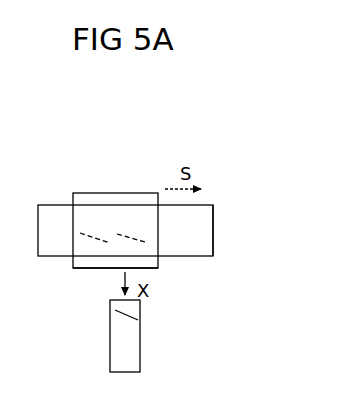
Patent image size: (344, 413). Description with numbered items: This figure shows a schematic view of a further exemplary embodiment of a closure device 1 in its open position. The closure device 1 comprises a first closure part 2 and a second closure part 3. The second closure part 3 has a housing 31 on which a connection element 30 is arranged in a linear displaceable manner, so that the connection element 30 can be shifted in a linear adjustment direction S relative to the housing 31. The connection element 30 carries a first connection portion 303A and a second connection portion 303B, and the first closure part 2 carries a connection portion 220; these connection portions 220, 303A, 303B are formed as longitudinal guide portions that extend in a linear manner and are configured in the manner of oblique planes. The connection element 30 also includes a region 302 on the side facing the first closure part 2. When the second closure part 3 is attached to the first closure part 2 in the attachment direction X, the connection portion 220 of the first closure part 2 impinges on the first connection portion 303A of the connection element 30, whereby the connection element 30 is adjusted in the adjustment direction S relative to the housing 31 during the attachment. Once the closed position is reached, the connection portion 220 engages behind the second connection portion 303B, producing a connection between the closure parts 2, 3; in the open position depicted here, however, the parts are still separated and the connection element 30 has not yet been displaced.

The optical module 1 is at (259, 184).
The first closure part 2 is at (156, 338).
The second closure part 3 is at (227, 232).
The connection element 30 is at (140, 193).
The housing 31 is at (206, 204).
The light exit region 302 is at (92, 274).
The first connection portion 303A is at (130, 235).
The second connection portion 303B is at (98, 242).
The connection portion 220 is at (130, 317).